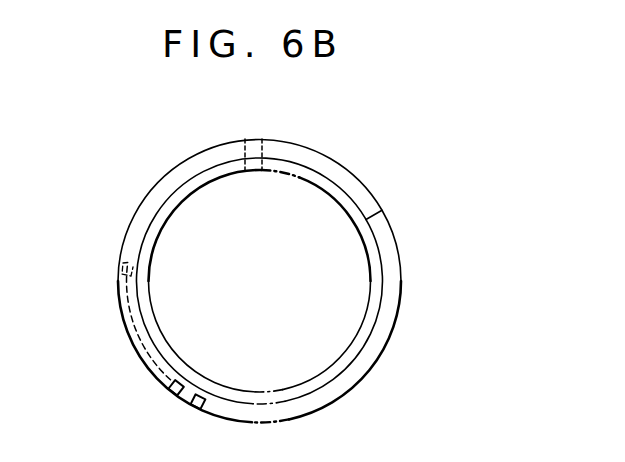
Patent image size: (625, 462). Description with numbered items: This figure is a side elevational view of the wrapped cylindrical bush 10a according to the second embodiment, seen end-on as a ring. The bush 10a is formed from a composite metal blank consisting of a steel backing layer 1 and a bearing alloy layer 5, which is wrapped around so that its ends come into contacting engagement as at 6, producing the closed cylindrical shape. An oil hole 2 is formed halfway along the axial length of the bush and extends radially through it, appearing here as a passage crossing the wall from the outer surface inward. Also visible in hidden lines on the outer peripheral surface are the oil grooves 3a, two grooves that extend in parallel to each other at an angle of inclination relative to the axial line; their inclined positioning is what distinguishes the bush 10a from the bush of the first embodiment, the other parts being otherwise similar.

The wrapped cylindrical bush 10a is at (375, 180).
The steel backing layer 1 is at (375, 338).
The oil hole 2 is at (244, 156).
The oil grooves 3a is at (132, 335).
The bearing alloy layer 5 is at (143, 243).
The contacting engagement 6 is at (382, 216).